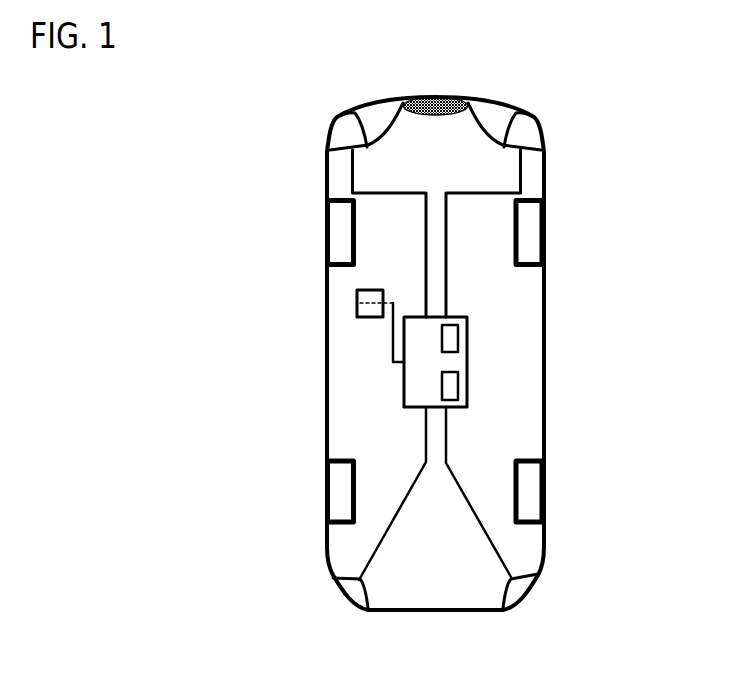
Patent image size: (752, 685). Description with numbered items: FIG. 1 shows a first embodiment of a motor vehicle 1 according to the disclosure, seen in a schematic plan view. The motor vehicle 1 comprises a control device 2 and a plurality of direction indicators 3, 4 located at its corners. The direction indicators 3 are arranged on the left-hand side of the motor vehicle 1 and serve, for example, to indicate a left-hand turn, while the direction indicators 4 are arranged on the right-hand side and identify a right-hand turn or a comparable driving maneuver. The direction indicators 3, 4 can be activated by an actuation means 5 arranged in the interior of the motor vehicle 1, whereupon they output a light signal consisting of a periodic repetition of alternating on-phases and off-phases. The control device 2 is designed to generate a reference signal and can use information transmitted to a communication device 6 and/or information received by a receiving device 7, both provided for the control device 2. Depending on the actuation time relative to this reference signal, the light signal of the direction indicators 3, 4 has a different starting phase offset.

The motor vehicle 1 is at (571, 167).
The control device 2 is at (420, 388).
The direction indicators 3 is at (343, 128).
The direction indicators 4 is at (518, 130).
The actuation means 5 is at (360, 303).
The communication device 6 is at (458, 338).
The receiving device 7 is at (458, 385).